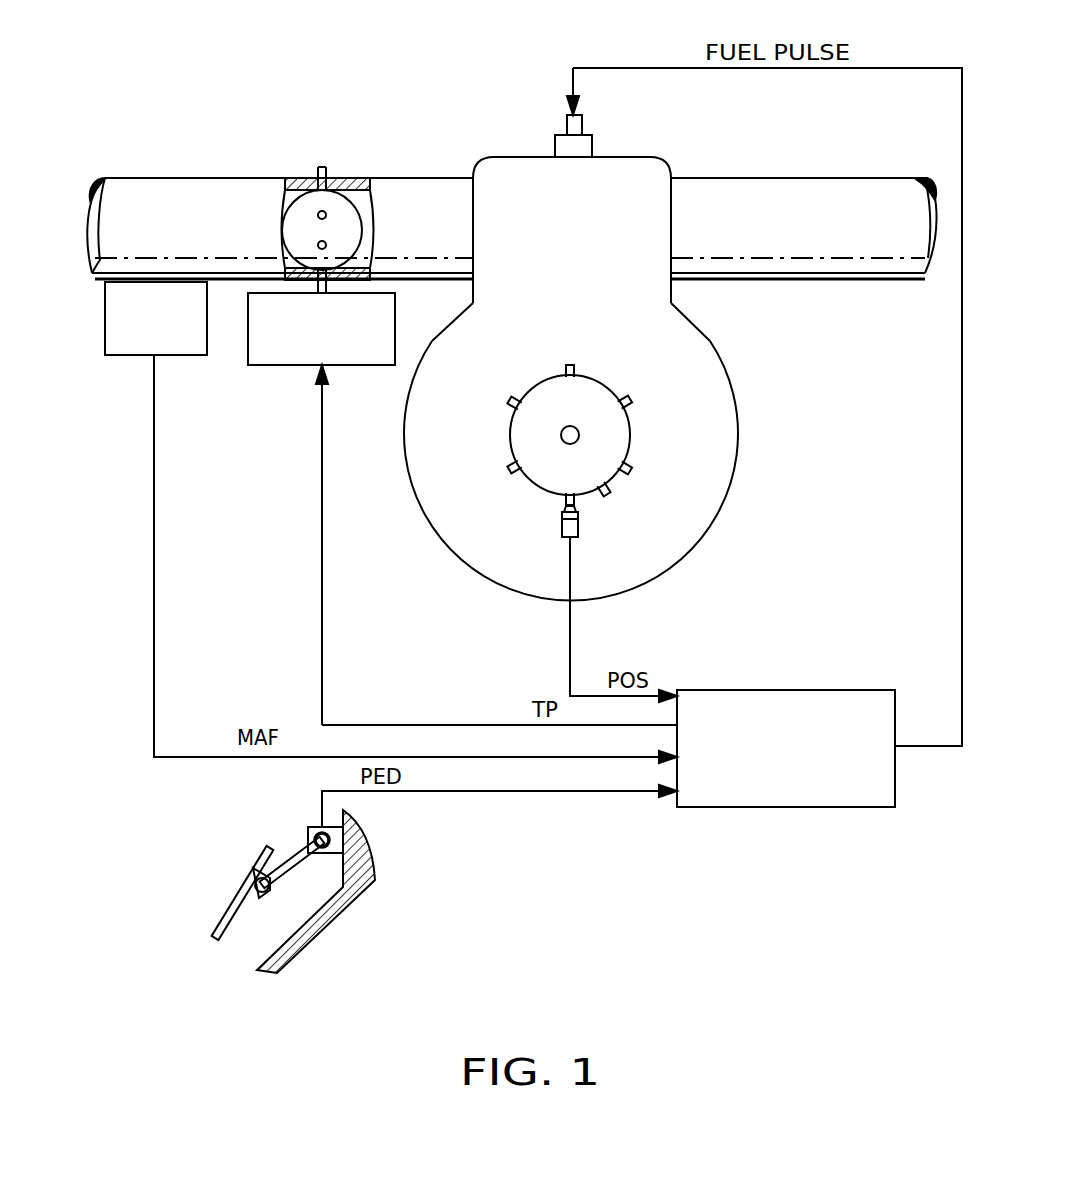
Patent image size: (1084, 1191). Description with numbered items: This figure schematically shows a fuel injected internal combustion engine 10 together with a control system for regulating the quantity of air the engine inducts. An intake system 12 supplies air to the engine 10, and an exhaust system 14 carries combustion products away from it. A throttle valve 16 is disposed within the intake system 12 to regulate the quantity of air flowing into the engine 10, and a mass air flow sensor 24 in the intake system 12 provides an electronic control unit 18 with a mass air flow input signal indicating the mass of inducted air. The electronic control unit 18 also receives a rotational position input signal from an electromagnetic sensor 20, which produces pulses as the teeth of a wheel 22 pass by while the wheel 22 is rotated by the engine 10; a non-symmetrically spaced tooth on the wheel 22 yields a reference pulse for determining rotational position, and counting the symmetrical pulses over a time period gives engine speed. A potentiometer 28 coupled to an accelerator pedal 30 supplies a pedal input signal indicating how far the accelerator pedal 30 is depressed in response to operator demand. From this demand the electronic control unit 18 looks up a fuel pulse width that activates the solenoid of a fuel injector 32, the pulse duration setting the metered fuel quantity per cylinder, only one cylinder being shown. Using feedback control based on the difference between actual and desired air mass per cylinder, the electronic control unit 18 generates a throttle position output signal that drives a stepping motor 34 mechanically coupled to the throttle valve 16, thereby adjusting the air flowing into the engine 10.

The internal combustion engine 10 is at (522, 123).
The intake system 12 is at (147, 178).
The exhaust system 14 is at (745, 178).
The throttle valve 16 is at (293, 225).
The electronic control unit 18 is at (857, 795).
The electromagnetic sensor 20 is at (563, 527).
The wheel 22 is at (628, 447).
The mass air flow sensor 24 is at (140, 357).
The potentiometer 28 is at (308, 830).
The accelerator pedal 30 is at (253, 866).
The fuel injector 32 is at (572, 127).
The stepping motor 34 is at (292, 365).